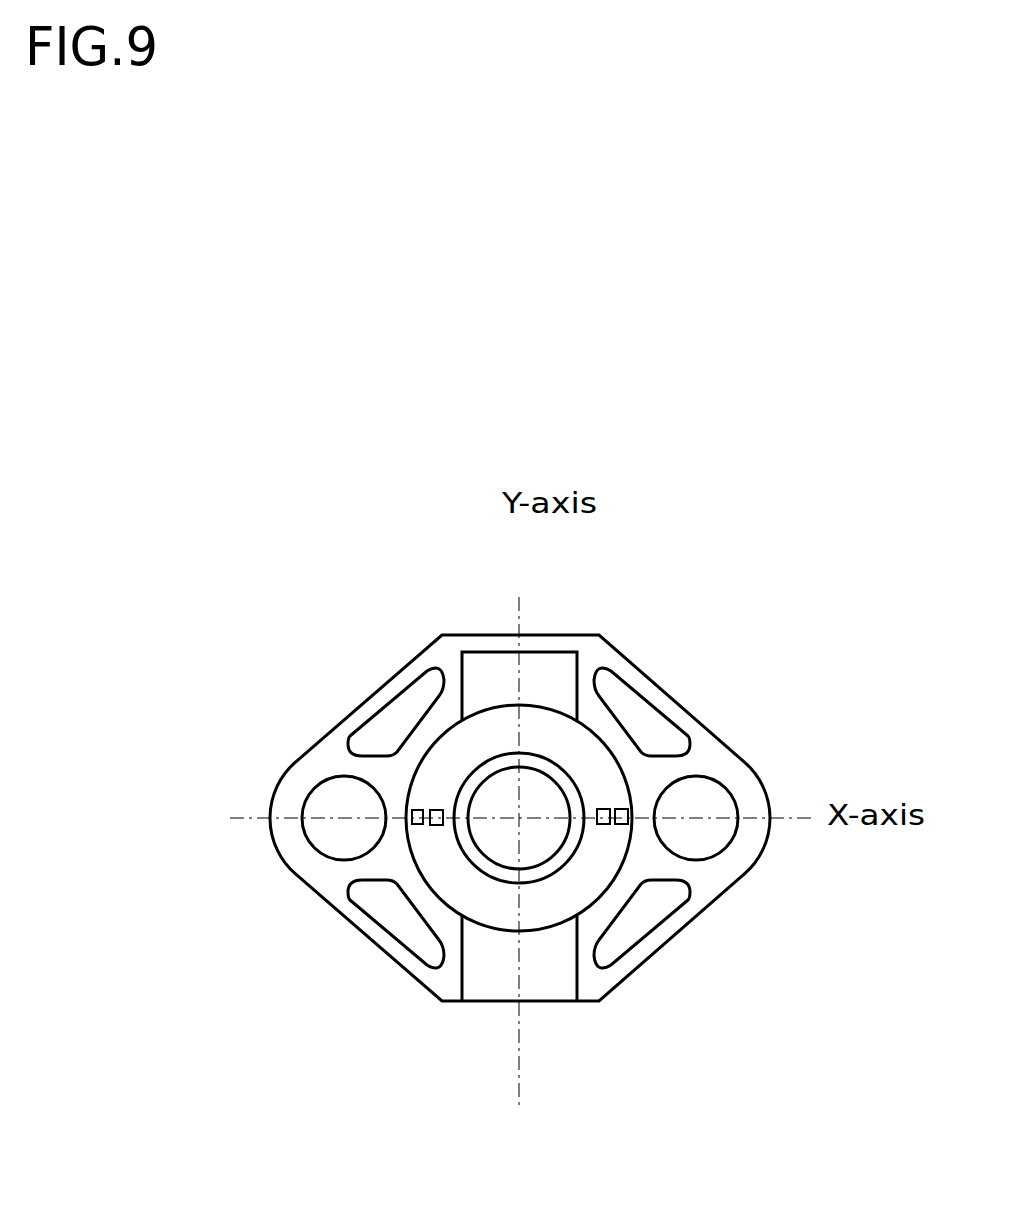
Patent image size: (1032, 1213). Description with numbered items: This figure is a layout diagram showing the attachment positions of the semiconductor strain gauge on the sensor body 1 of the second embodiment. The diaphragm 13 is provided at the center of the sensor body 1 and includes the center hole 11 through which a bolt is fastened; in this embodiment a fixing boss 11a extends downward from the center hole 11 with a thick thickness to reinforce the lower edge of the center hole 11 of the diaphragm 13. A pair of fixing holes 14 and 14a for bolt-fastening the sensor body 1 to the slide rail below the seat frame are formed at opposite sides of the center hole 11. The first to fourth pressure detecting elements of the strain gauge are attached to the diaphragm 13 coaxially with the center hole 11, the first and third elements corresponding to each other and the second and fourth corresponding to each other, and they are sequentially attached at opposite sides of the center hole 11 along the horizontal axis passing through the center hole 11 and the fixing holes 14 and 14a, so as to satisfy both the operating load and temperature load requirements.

The sensor body 1 is at (654, 976).
The center hole 11 is at (542, 832).
The fixing boss 11a is at (492, 870).
The diaphragm 13 is at (437, 867).
The fixing hole 14 is at (327, 800).
The fixing hole 14a is at (703, 797).